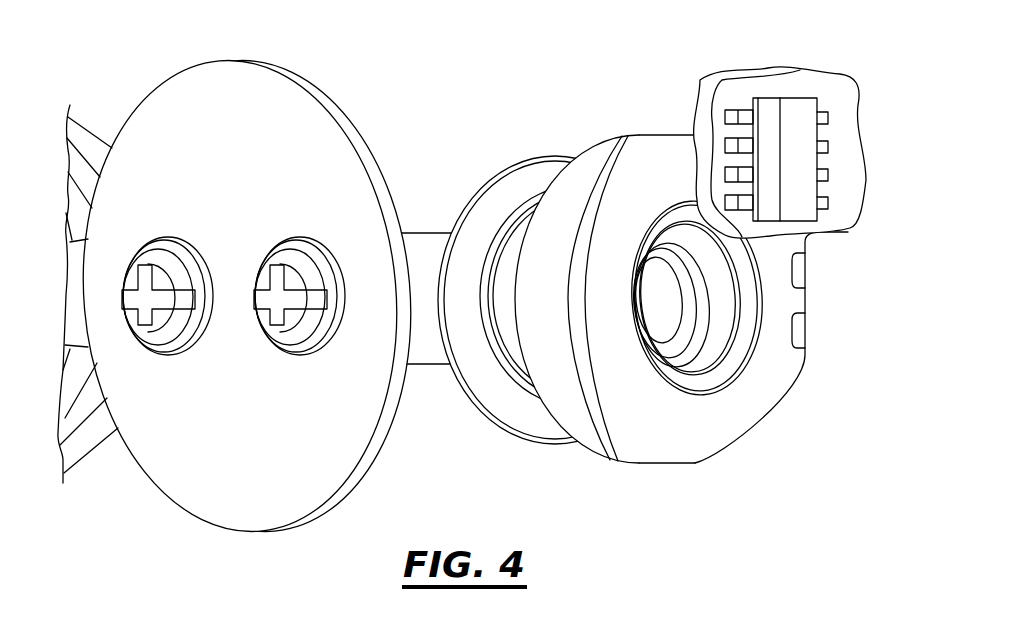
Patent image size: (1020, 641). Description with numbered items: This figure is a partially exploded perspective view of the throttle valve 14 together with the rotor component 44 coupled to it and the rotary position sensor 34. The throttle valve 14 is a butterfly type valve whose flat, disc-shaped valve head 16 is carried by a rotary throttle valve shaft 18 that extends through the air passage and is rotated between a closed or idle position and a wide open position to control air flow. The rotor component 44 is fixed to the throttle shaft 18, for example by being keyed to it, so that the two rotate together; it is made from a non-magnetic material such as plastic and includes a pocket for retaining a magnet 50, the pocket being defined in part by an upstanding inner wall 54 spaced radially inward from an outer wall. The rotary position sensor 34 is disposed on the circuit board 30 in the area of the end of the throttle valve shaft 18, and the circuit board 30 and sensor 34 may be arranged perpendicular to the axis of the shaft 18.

The throttle valve 14 is at (495, 152).
The valve head 16 is at (304, 120).
The throttle valve shaft 18 is at (425, 345).
The circuit board 30 is at (785, 82).
The rotary position sensor 34 is at (803, 114).
The rotor component 44 is at (542, 150).
The magnet 50 is at (720, 428).
The inner wall 54 is at (680, 332).